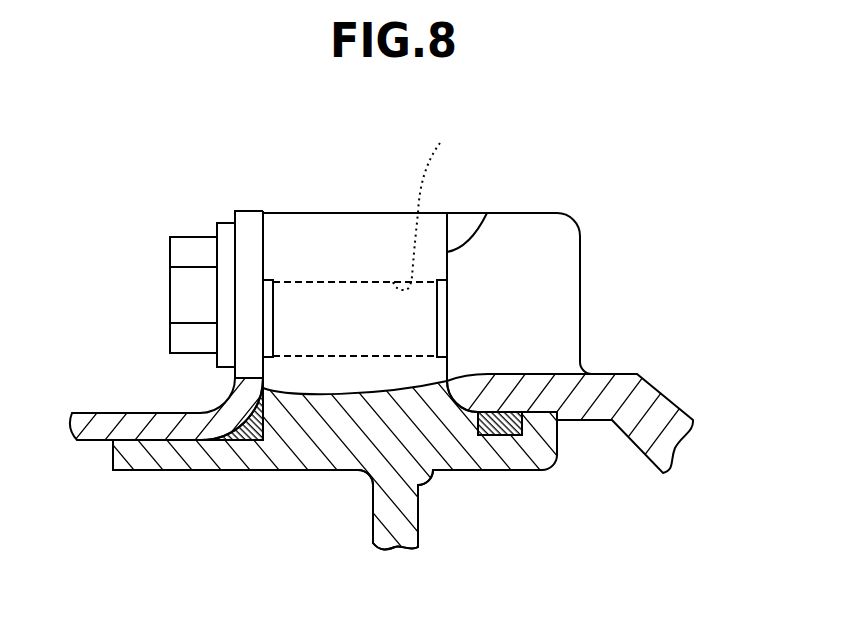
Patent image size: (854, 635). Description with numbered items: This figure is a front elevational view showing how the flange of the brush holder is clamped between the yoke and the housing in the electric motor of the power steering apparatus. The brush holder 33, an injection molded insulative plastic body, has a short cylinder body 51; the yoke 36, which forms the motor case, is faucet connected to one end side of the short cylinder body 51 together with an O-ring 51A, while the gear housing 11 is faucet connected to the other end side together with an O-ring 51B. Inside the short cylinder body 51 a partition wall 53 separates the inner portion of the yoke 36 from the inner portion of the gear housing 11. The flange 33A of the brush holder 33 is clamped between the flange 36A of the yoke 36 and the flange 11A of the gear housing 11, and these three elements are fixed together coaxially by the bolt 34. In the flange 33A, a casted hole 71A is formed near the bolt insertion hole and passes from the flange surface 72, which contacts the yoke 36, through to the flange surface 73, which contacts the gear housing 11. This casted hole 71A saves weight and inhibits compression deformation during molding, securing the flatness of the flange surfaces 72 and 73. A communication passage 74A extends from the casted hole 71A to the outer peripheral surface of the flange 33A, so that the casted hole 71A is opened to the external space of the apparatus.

The gear housing 11 is at (660, 420).
The flange of the gear housing 11A is at (540, 223).
The brush holder 33 is at (323, 210).
The flange of the brush holder 33A is at (372, 215).
The bolt 34 is at (182, 252).
The yoke 36 is at (100, 412).
The flange of the yoke 36A is at (247, 212).
The short cylinder body 51 is at (520, 460).
The O-ring 51A is at (250, 428).
The O-ring 51B is at (525, 418).
The partition wall 53 is at (420, 535).
The casted hole 71A is at (429, 201).
The flange surface 72 is at (262, 243).
The flange surface 73 is at (477, 213).
The communication passage 74A is at (273, 317).